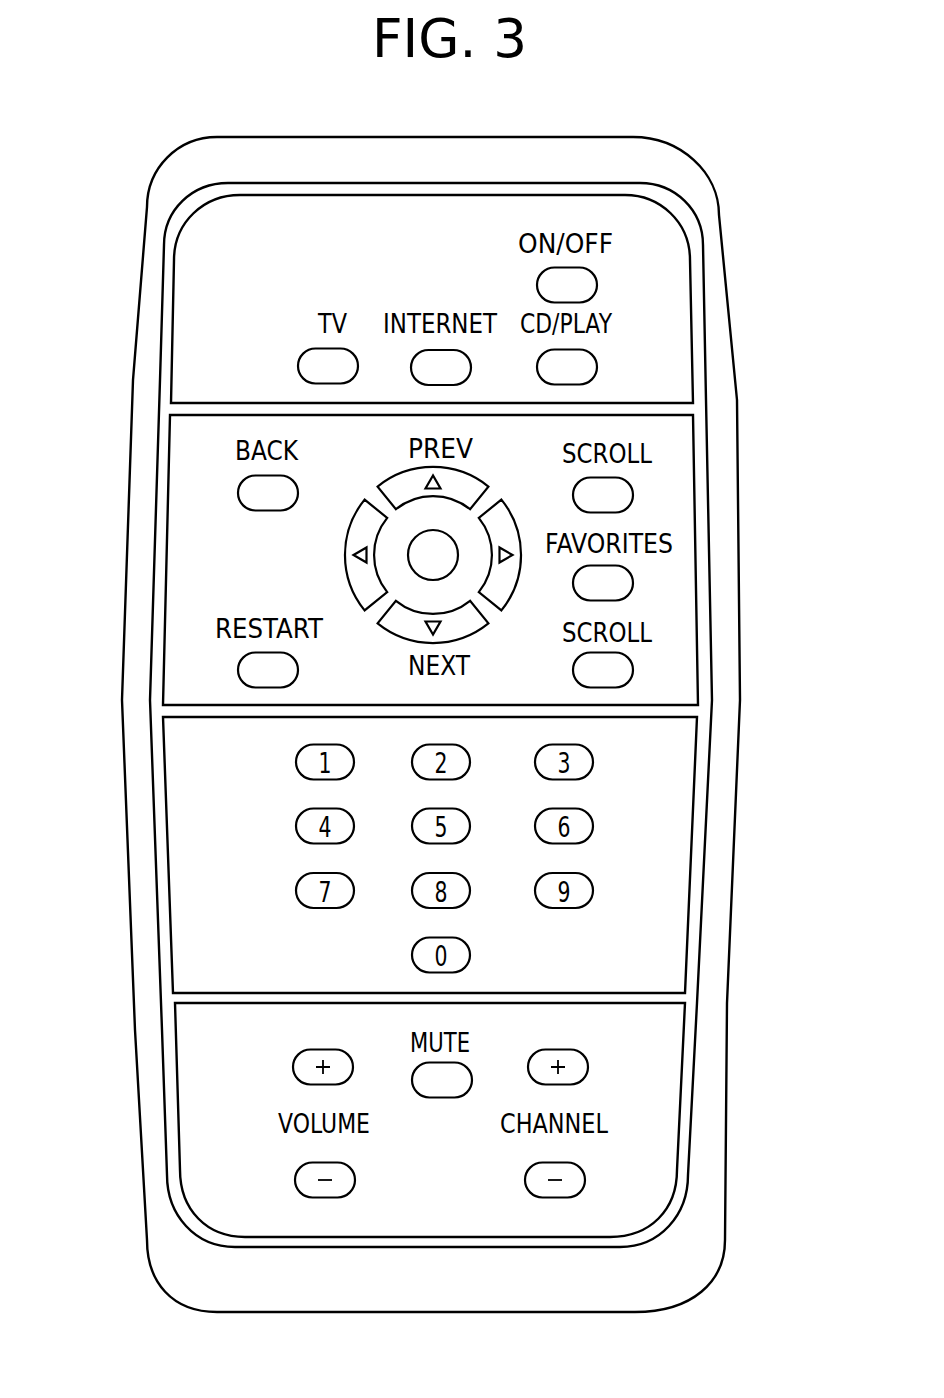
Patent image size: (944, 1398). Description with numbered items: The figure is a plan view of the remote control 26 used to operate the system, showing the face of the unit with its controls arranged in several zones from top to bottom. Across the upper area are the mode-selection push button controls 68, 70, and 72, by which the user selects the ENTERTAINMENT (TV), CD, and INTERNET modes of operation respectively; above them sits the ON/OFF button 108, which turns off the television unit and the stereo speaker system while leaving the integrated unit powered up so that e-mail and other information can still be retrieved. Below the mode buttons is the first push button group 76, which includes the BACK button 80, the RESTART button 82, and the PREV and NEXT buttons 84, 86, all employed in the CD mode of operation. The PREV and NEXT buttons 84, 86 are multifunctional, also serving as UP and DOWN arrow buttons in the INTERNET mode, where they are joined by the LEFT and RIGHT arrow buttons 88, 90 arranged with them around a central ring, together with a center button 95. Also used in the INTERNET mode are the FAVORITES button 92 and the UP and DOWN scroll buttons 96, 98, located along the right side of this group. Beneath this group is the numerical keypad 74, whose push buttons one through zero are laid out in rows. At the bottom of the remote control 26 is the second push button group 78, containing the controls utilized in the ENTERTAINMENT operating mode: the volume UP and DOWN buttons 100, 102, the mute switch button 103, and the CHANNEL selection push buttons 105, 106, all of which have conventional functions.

The remote control 26 is at (178, 122).
The push button control 68 is at (305, 352).
The push button control 70 is at (597, 365).
The push button control 72 is at (466, 377).
The numerical keypad 74 is at (200, 822).
The push button group 76 is at (205, 588).
The push button group 78 is at (220, 1077).
The BACK button 80 is at (242, 483).
The RESTART button 82 is at (243, 676).
The PREV button 84 is at (388, 480).
The NEXT button 86 is at (398, 628).
The LEFT arrow button 88 is at (360, 592).
The RIGHT arrow button 90 is at (504, 505).
The FAVORITES button 92 is at (633, 585).
The center select button 95 is at (443, 570).
The UP scroll button 96 is at (633, 497).
The DOWN scroll button 98 is at (633, 672).
The volume UP button 100 is at (305, 1055).
The volume DOWN button 102 is at (355, 1180).
The mute switch button 103 is at (470, 1068).
The CHANNEL selection push button 105 is at (575, 1056).
The CHANNEL selection push button 106 is at (527, 1190).
The ON/OFF button 108 is at (537, 283).